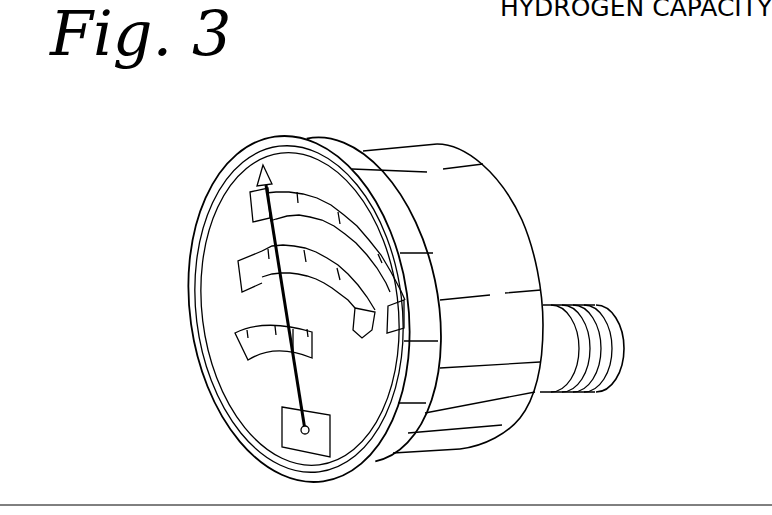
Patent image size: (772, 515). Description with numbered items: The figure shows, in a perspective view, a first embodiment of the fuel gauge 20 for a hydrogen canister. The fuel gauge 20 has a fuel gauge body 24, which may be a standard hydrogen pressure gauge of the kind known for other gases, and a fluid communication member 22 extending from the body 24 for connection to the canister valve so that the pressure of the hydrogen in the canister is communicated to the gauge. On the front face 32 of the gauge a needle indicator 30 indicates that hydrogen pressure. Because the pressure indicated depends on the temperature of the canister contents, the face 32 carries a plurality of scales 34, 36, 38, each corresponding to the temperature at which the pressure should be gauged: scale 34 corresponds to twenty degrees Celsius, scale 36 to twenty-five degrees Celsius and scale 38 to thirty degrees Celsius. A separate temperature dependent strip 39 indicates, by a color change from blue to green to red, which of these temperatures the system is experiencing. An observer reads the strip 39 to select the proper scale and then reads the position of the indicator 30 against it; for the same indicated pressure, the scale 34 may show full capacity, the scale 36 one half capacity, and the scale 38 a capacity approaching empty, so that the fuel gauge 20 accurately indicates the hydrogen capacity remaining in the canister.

The fuel gauge 20 is at (460, 138).
The fluid communication member 22 is at (584, 393).
The fuel gauge body 24 is at (397, 148).
The needle indicator 30 is at (296, 386).
The front face 32 is at (233, 207).
The scale 34 is at (243, 340).
The scale 36 is at (238, 279).
The scale 38 is at (256, 215).
The temperature dependent strip 39 is at (300, 443).